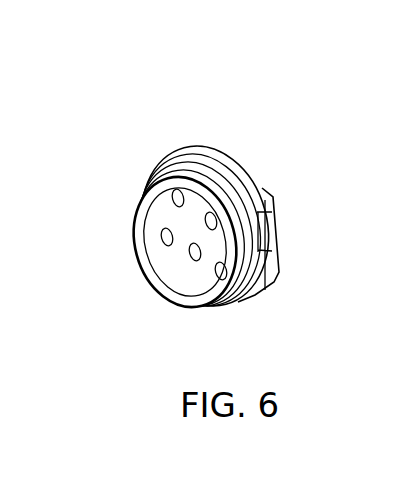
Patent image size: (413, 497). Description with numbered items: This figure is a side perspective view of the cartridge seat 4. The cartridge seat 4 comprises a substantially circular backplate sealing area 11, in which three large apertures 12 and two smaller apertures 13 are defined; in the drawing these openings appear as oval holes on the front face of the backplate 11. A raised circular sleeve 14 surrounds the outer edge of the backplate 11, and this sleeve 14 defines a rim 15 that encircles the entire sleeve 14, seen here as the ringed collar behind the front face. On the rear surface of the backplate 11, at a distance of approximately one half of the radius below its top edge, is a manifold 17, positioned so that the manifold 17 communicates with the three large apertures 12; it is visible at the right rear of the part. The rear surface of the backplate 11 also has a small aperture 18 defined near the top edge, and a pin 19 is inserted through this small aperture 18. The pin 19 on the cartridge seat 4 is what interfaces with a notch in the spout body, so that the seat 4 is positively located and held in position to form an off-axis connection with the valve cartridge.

The cartridge seat 4 is at (168, 126).
The backplate sealing area 11 is at (200, 268).
The large apertures 12 is at (176, 199).
The smaller apertures 13 is at (168, 239).
The raised circular sleeve 14 is at (220, 183).
The rim 15 is at (145, 175).
The manifold 17 is at (282, 228).
The small aperture 18 is at (203, 165).
The pin 19 is at (192, 168).